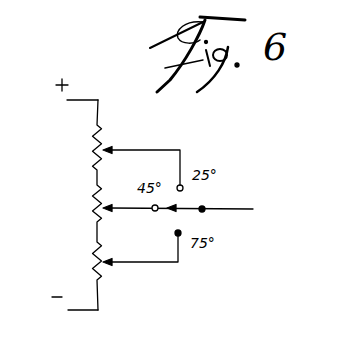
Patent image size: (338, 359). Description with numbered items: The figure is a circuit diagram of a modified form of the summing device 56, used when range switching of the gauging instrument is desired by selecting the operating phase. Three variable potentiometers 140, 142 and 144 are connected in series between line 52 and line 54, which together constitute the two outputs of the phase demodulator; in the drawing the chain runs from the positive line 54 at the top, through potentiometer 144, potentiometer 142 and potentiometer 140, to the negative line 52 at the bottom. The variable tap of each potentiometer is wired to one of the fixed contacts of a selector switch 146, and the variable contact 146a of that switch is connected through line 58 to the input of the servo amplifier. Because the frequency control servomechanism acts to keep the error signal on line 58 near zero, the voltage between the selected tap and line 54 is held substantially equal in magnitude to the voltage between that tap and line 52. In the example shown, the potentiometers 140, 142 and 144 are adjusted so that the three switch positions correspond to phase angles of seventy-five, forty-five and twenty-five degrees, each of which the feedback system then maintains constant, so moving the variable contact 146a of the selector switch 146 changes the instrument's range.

The line 54 is at (83, 100).
The line 52 is at (78, 310).
The variable potentiometer 144 is at (90, 151).
The variable potentiometer 142 is at (90, 209).
The variable potentiometer 140 is at (90, 263).
The summing device 56 is at (150, 141).
The line 58 is at (235, 211).
The selector switch 146 is at (216, 192).
The variable contact 146a is at (180, 213).